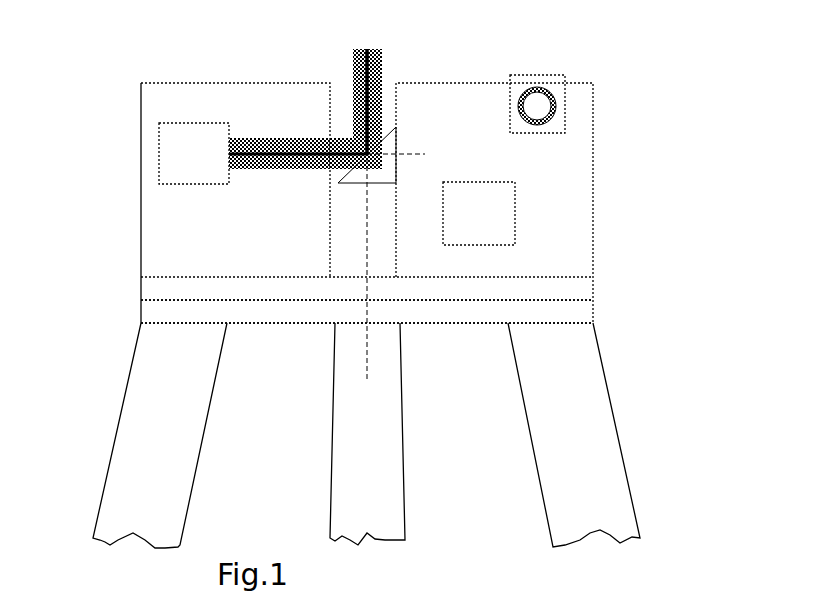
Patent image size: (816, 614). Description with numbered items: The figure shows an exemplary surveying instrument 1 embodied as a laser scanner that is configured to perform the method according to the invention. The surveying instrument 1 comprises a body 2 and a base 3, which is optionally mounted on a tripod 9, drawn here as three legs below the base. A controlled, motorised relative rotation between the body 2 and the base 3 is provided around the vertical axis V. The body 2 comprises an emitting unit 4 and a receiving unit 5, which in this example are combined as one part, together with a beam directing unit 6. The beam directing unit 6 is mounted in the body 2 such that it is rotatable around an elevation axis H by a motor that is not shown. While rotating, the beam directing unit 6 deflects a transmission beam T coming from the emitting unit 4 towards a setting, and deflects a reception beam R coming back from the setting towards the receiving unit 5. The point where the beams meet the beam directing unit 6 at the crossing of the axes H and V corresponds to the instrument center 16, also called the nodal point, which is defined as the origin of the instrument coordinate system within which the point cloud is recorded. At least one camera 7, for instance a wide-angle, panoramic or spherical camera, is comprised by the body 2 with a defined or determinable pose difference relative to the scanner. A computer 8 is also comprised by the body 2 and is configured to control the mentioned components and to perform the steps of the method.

The surveying instrument 1 is at (371, 279).
The body 2 is at (58, 82).
The base 3 is at (58, 295).
The emitting unit 4 is at (194, 153).
The receiving unit 5 is at (194, 153).
The beam directing unit 6 is at (380, 180).
The camera 7 is at (523, 80).
The computer 8 is at (479, 213).
The tripod 9 is at (58, 325).
The instrument center 16 is at (374, 158).
The transmission beam T is at (363, 72).
The reception beam R is at (380, 77).
The elevation axis H is at (408, 153).
The axis V is at (367, 353).